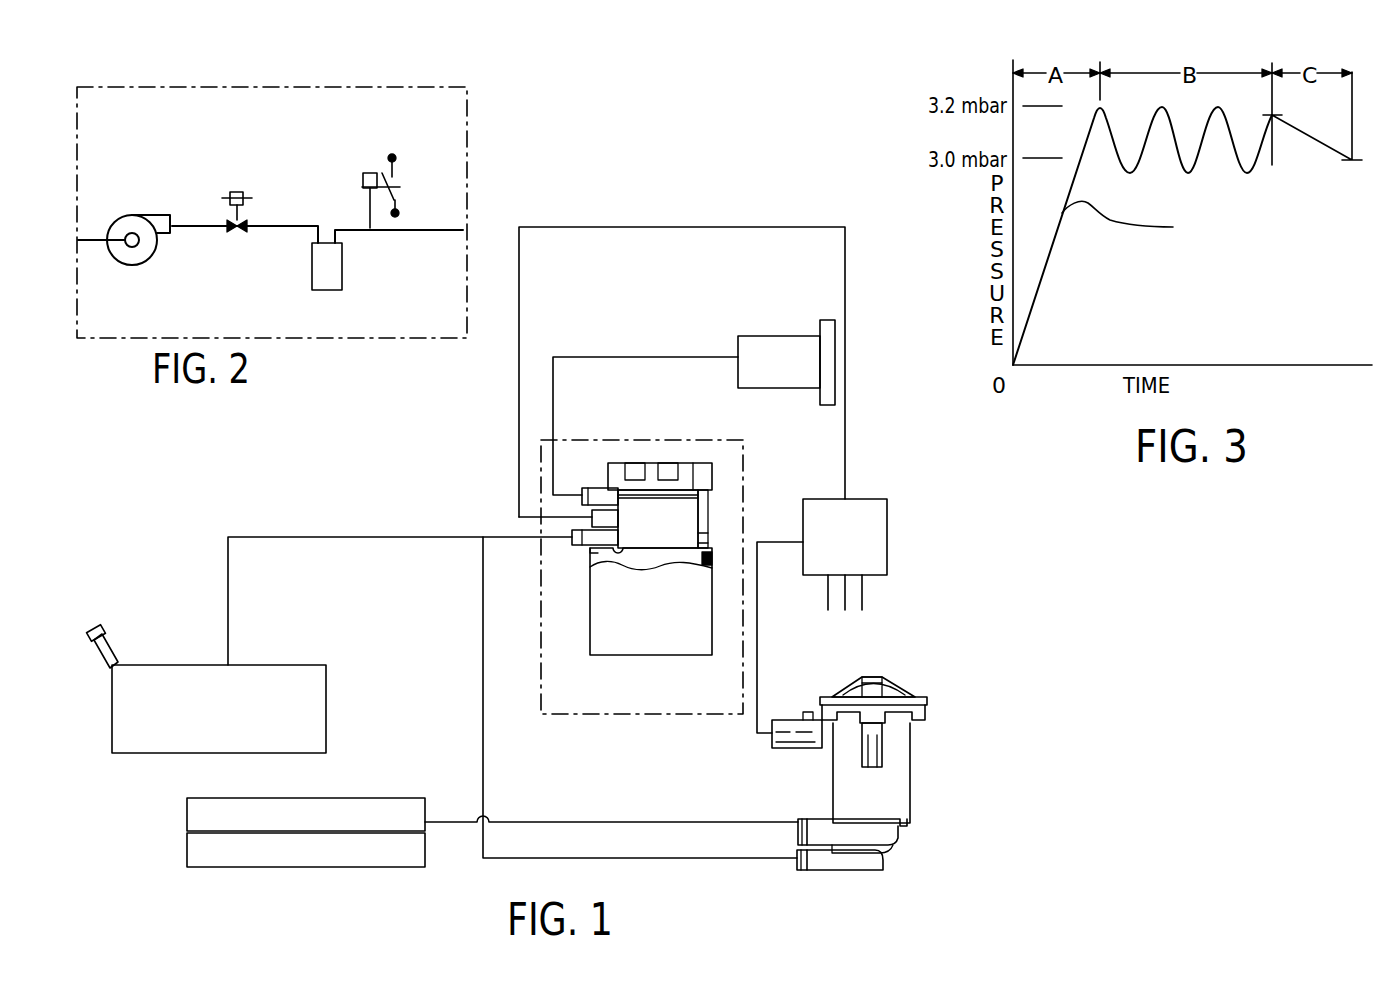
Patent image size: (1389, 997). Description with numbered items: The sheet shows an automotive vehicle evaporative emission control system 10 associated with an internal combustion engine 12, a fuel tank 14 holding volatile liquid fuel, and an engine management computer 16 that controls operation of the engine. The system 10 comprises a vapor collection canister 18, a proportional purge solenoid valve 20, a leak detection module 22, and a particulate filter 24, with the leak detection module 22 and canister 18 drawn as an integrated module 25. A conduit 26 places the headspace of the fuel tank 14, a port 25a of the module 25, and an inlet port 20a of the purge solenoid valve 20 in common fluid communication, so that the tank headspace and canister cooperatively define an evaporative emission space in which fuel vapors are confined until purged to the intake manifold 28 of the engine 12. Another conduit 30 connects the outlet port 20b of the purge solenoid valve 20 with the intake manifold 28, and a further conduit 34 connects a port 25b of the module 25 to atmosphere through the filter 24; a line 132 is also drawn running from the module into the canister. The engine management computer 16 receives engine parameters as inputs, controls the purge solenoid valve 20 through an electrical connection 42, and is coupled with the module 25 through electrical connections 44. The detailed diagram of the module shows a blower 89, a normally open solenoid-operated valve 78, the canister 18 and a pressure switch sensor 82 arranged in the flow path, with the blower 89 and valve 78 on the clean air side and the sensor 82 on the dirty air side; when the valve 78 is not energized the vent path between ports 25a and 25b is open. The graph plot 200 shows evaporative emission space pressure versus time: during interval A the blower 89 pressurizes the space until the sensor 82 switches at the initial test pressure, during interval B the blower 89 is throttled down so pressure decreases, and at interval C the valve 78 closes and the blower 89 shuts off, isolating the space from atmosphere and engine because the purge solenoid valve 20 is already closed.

In FIG. 1, the evaporative emission control system 10 is at (925, 820).
In FIG. 1, the internal combustion engine 12 is at (187, 845).
In FIG. 1, the fuel tank 14 is at (326, 686).
In FIG. 1, the engine management computer 16 is at (887, 499).
In FIG. 2, the vapor collection canister 18 is at (330, 290).
In FIG. 1, the vapor collection canister 18 is at (662, 643).
In FIG. 1, the proportional purge solenoid valve 20 is at (833, 777).
In FIG. 1, the inlet port 20a is at (821, 872).
In FIG. 1, the outlet port 20b is at (797, 828).
In FIG. 1, the leak detection module 22 is at (712, 477).
In FIG. 1, the particulate filter 24 is at (757, 336).
In FIG. 1, the integrated assembly 25 is at (593, 660).
In FIG. 2, the port 25a is at (462, 228).
In FIG. 1, the port 25a is at (572, 545).
In FIG. 2, the port 25b is at (100, 240).
In FIG. 1, the port 25b is at (598, 487).
In FIG. 1, the conduit 26 is at (355, 537).
In FIG. 1, the intake manifold 28 is at (187, 816).
In FIG. 1, the conduit 30 is at (512, 823).
In FIG. 1, the conduit 34 is at (613, 357).
In FIG. 1, the electrical connection 42 is at (757, 693).
In FIG. 1, the electrical connections 44 is at (645, 227).
In FIG. 2, the solenoid-operated valve 78 is at (243, 213).
In FIG. 2, the electric sensor 82 is at (363, 176).
In FIG. 2, the blower 89 is at (147, 215).
In FIG. 1, the purge line 132 is at (519, 517).
In FIG. 3, the graph plot 200 is at (1173, 227).